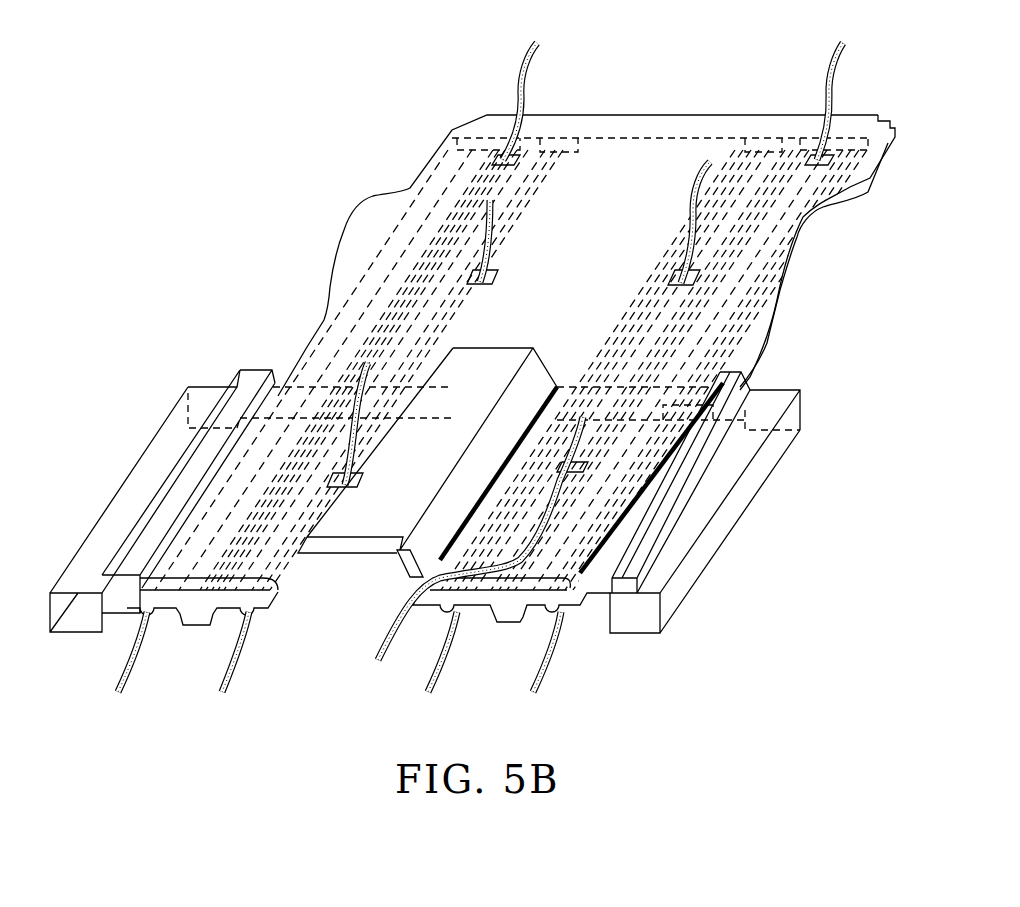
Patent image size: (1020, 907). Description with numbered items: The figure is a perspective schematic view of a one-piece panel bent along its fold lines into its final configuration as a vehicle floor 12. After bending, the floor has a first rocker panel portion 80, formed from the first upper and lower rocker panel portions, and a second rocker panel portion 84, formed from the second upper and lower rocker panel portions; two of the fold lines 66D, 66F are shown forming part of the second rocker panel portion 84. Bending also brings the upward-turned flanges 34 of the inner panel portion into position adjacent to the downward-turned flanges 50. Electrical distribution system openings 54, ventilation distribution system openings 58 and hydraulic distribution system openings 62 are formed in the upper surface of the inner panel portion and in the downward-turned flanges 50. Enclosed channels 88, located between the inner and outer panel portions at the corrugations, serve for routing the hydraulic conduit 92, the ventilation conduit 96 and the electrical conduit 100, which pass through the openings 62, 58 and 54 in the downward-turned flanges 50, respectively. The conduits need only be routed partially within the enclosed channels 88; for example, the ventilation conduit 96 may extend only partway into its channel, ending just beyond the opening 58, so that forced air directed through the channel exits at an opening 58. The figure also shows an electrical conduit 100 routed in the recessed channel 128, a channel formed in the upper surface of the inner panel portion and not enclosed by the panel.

The vehicle floor 12 is at (243, 198).
The upward-turned flanges 34 is at (162, 501).
The downward-turned flanges 50 is at (173, 602).
The electrical distribution system openings 54 is at (832, 158).
The ventilation distribution system openings 58 is at (672, 278).
The hydraulic distribution system openings 62 is at (497, 155).
The fold line 66D is at (753, 388).
The fold line 66F is at (744, 490).
The first rocker panel portion 80 is at (187, 473).
The second rocker panel portion 84 is at (725, 383).
The enclosed channels 88 is at (820, 113).
The hydraulic conduit 92 is at (130, 675).
The ventilation conduit 96 is at (442, 677).
The electrical conduit 100 is at (378, 650).
The recessed channel 128 is at (528, 503).